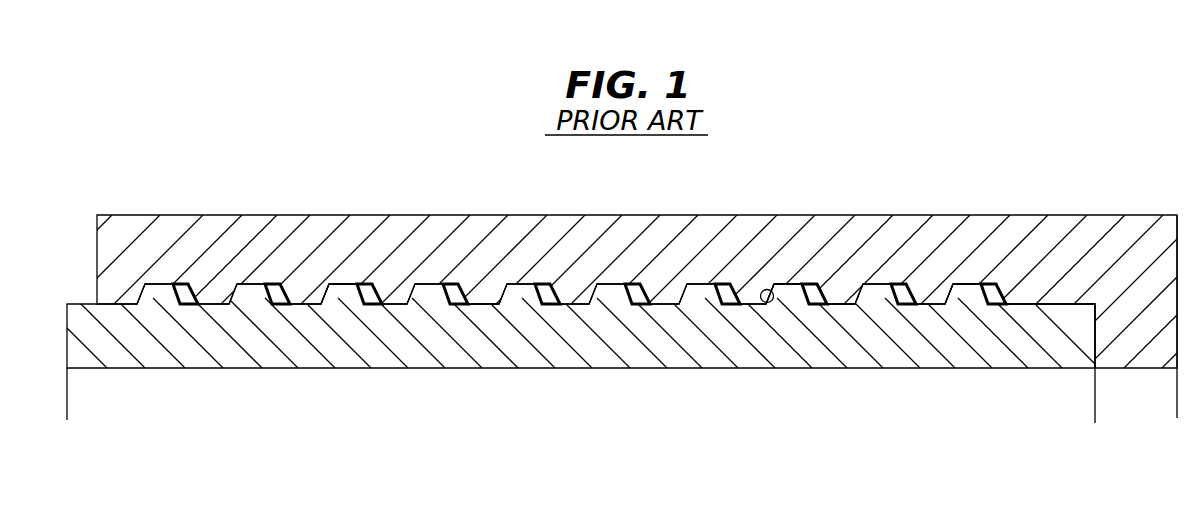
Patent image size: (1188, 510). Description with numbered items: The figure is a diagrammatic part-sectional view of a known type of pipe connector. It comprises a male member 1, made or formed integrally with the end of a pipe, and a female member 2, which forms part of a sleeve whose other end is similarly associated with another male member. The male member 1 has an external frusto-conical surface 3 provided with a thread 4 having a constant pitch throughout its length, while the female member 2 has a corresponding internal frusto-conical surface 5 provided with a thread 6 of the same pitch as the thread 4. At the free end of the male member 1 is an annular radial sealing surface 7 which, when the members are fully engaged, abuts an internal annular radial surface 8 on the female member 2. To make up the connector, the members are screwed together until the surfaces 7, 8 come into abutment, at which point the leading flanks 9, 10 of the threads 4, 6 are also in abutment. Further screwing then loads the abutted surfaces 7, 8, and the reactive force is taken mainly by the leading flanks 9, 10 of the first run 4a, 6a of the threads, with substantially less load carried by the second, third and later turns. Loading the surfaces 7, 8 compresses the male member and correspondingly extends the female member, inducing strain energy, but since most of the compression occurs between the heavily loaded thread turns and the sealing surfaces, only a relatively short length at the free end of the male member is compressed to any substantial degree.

The male member 1 is at (813, 352).
The female member 2 is at (613, 217).
The external frusto-conical surface 3 is at (490, 297).
The thread 4 is at (333, 293).
The first run of thread 4a is at (963, 288).
The internal frusto-conical surface 5 is at (843, 305).
The thread 6 is at (318, 292).
The first run of thread 6a is at (926, 300).
The annular radial sealing surface 7 is at (1097, 330).
The internal annular radial surface 8 is at (1090, 350).
The leading flank 9 is at (764, 298).
The leading flank 10 is at (781, 284).